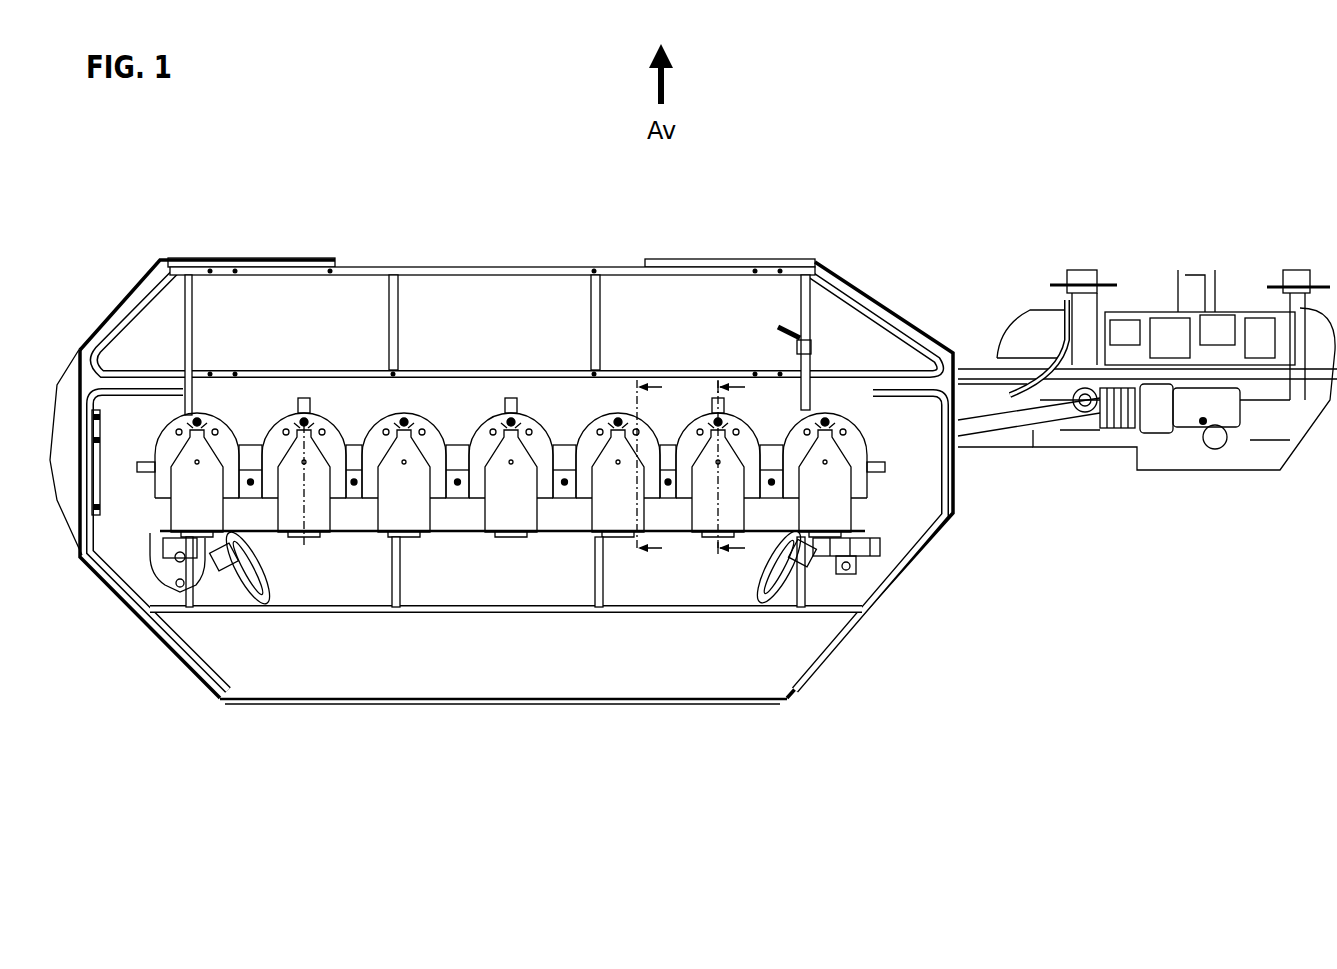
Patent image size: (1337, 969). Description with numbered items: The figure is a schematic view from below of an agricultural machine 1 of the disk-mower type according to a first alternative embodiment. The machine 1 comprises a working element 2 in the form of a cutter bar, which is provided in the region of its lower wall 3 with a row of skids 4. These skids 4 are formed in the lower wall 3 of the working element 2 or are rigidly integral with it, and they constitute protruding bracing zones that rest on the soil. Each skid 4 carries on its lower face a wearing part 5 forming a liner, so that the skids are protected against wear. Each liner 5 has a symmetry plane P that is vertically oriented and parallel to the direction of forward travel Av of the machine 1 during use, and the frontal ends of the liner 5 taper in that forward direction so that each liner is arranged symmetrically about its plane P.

The agricultural machine 1 is at (1146, 105).
The working element 2 is at (913, 586).
The lower wall 3 is at (770, 480).
The skid 4 is at (213, 430).
The wearing part 5 is at (200, 520).
The symmetry plane P is at (305, 465).